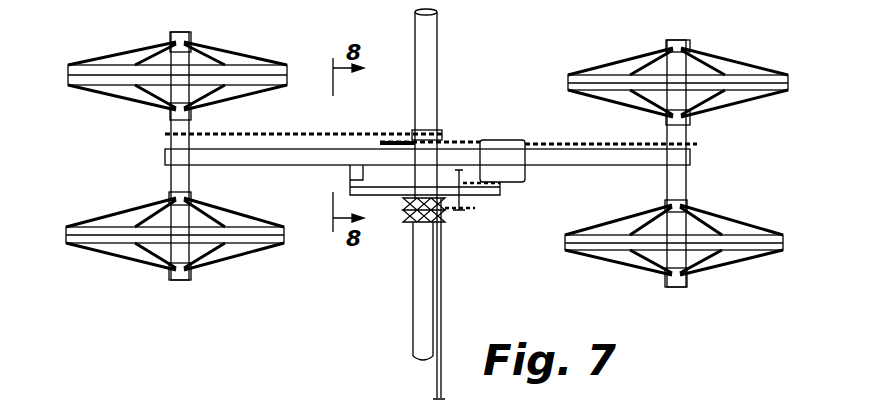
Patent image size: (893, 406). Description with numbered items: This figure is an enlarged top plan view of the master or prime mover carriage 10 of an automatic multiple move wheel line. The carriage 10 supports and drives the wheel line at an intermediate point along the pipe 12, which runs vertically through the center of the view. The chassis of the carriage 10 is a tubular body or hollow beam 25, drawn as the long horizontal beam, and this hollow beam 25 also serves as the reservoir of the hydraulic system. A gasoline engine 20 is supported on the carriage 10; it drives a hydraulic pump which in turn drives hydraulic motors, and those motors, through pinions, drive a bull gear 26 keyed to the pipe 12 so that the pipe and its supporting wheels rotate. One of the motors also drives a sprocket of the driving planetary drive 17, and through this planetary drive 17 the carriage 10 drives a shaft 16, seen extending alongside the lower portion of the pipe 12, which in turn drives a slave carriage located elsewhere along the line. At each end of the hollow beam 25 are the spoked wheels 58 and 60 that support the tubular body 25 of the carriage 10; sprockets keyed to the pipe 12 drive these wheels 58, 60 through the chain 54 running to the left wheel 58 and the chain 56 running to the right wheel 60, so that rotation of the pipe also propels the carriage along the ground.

The master or prime mover carriage 10 is at (488, 66).
The pipe 12 is at (411, 282).
The shaft 16 is at (441, 314).
The driving planetary drive 17 is at (458, 220).
The gasoline engine 20 is at (496, 142).
The tubular body or hollow beam 25 is at (594, 170).
The bull gear 26 is at (398, 147).
The chain 54 is at (262, 132).
The chain 56 is at (565, 140).
The wheel 58 is at (125, 227).
The wheel 60 is at (745, 232).